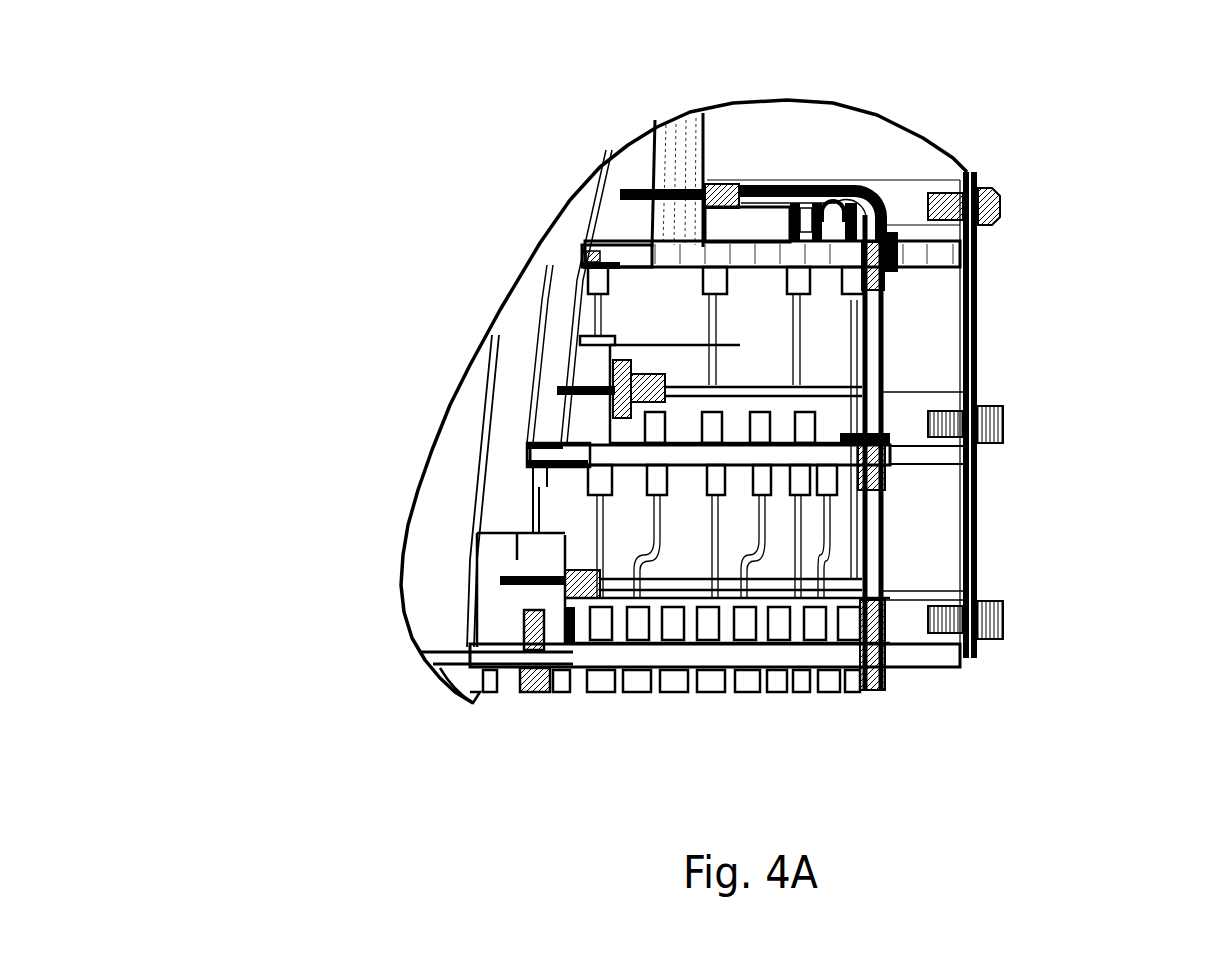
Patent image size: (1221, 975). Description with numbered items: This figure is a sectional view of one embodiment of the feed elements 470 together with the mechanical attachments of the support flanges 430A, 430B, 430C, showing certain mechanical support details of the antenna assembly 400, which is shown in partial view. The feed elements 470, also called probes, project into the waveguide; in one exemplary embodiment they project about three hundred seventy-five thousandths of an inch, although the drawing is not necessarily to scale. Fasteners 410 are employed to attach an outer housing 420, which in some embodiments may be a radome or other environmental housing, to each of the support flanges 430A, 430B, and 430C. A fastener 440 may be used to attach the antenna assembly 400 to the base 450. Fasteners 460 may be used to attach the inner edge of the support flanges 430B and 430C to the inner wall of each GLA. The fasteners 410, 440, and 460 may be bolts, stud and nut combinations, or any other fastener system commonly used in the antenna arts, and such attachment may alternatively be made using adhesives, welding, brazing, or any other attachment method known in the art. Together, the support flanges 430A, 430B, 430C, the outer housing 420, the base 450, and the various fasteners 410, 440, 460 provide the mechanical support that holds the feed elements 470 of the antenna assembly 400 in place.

The antenna assembly 400 is at (517, 248).
The fasteners 410 is at (1005, 207).
The outer housing 420 is at (973, 340).
The support flange 430A is at (905, 652).
The support flange 430B is at (960, 454).
The support flange 430C is at (960, 256).
The fastener 440 is at (547, 693).
The base 450 is at (485, 695).
The fasteners 460 is at (583, 253).
The feed elements 470 is at (620, 192).